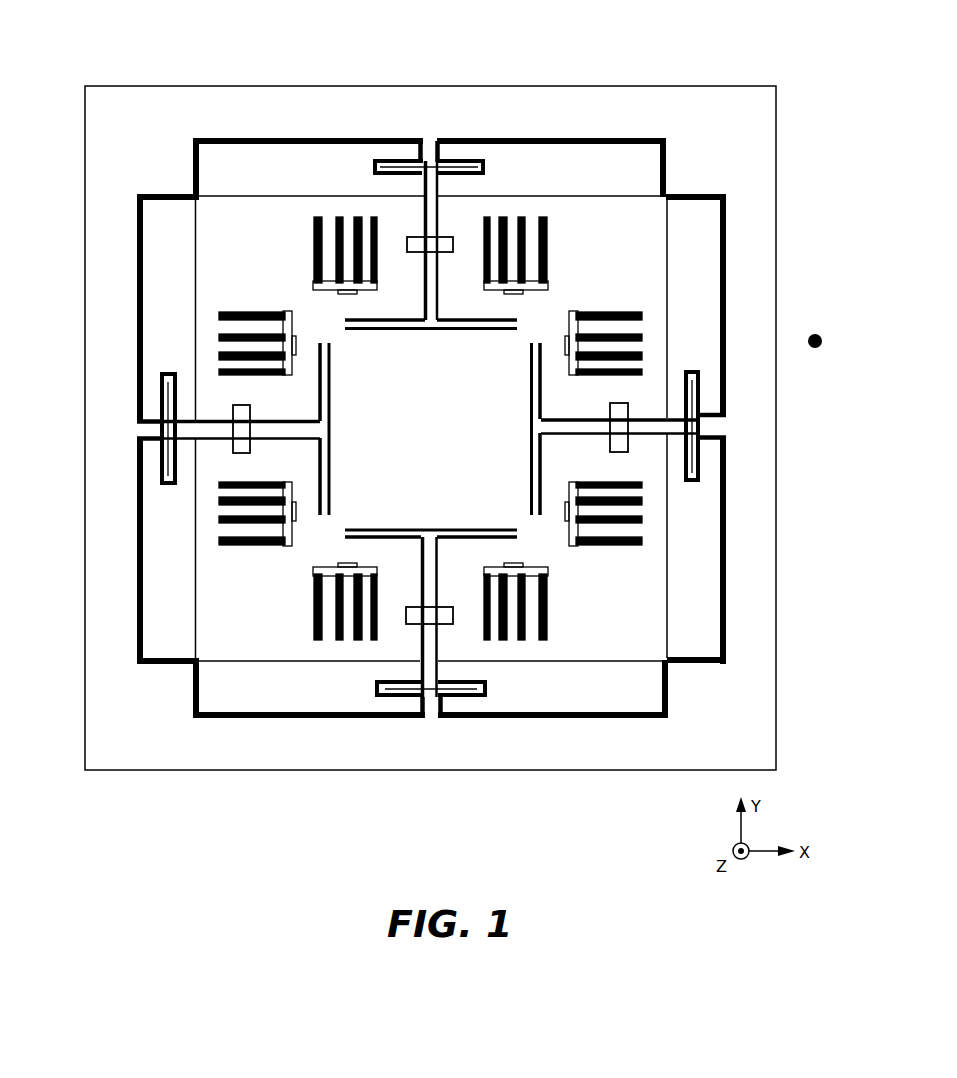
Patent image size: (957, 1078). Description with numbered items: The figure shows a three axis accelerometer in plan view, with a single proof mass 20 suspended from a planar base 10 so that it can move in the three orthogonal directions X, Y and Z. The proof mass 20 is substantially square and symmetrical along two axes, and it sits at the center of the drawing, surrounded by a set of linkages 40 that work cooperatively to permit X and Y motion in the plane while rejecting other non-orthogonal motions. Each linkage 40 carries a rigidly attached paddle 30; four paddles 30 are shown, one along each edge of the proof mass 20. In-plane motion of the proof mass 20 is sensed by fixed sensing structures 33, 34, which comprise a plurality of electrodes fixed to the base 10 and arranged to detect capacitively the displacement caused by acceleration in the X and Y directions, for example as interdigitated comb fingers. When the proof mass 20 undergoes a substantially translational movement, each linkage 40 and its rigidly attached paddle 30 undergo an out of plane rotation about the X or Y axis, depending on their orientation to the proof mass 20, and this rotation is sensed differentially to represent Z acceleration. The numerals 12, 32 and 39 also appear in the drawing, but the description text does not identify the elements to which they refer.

The planar base 10 is at (752, 411).
The Z-axis indicator dot 12 is at (822, 340).
The proof mass 20 is at (478, 382).
The paddle 30 is at (602, 170).
The cross flexure 32 is at (448, 238).
The sensing structure 33 is at (370, 597).
The sensing structure 34 is at (623, 485).
The Y-axis flexure beam 39 is at (227, 428).
The linkage 40 is at (430, 215).